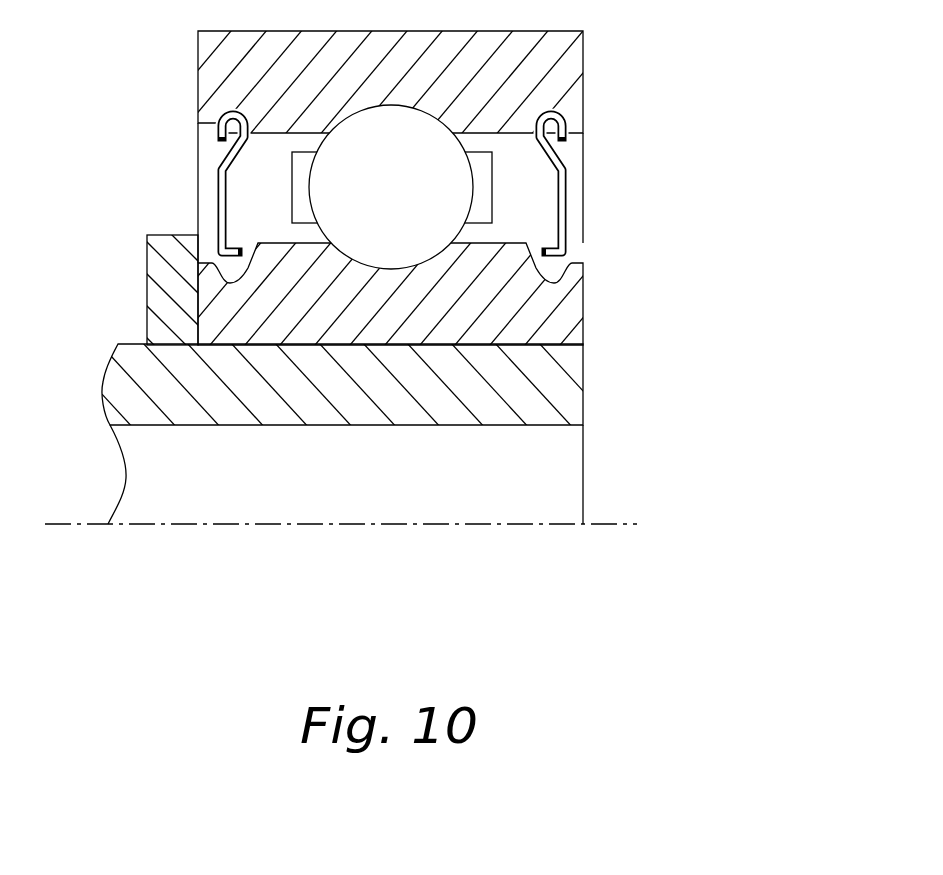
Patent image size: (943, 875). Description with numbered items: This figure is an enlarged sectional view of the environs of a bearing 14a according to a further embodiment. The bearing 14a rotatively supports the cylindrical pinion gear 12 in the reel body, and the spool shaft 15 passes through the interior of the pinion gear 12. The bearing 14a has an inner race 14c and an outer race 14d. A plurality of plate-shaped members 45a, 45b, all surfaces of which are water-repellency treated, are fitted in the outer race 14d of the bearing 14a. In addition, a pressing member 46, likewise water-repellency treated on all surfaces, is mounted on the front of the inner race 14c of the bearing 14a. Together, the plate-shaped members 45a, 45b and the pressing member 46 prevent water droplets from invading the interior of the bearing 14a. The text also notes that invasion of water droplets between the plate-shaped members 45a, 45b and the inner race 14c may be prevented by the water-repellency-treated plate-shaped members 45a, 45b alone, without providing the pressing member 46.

The bearing 14a is at (716, 103).
The inner race 14c is at (565, 312).
The outer race 14d is at (572, 65).
The plate-shaped member 45a is at (217, 198).
The plate-shaped member 45b is at (566, 203).
The pressing member 46 is at (168, 296).
The pinion gear 12 is at (567, 388).
The spool shaft 15 is at (565, 480).